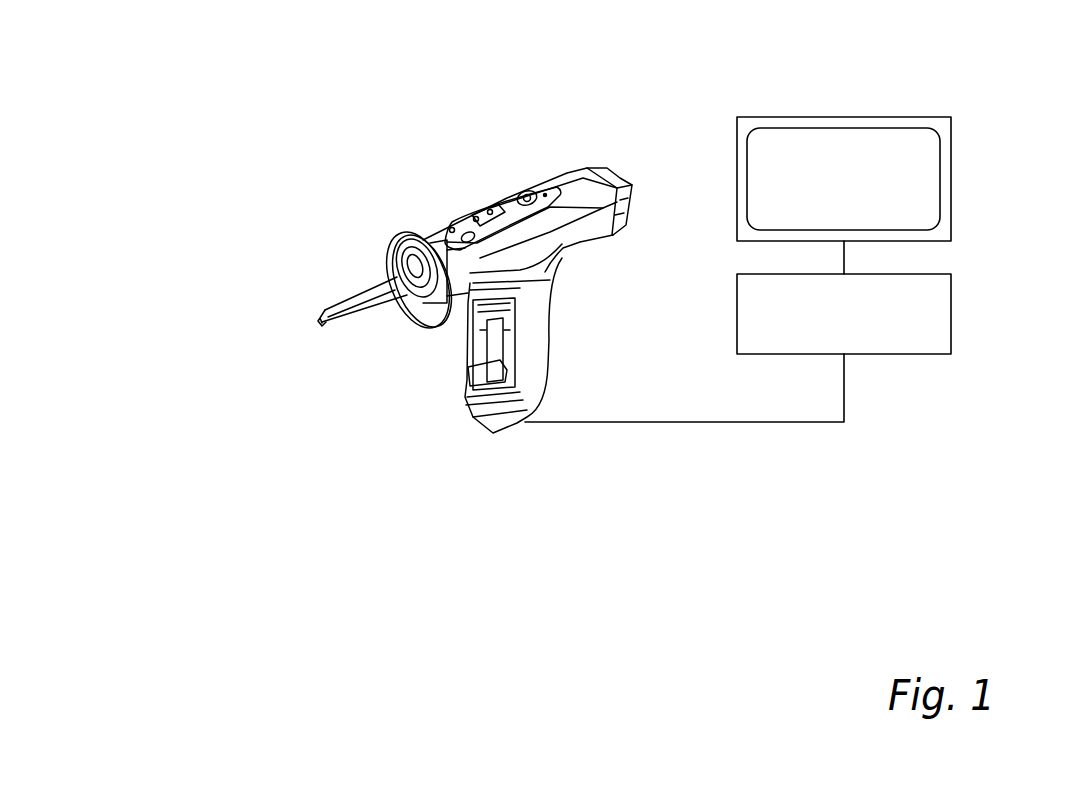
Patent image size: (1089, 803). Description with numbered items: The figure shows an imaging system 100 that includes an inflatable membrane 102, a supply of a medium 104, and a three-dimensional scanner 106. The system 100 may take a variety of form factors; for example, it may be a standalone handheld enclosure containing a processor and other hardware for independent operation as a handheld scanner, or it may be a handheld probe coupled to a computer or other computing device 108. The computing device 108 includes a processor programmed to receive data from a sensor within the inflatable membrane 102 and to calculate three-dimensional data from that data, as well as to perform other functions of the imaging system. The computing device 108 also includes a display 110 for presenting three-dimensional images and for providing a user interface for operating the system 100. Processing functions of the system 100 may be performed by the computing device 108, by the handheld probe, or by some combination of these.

The system 100 is at (277, 137).
The inflatable membrane 102 is at (358, 295).
The supply of a medium 104 is at (477, 350).
The three-dimensional scanner 106 is at (472, 172).
The computing device 108 is at (952, 307).
The display 110 is at (952, 172).